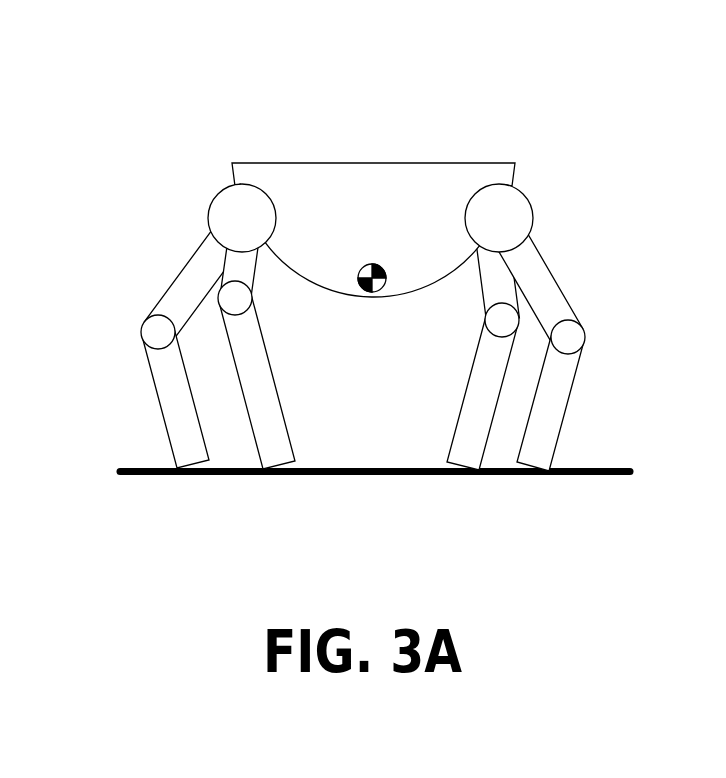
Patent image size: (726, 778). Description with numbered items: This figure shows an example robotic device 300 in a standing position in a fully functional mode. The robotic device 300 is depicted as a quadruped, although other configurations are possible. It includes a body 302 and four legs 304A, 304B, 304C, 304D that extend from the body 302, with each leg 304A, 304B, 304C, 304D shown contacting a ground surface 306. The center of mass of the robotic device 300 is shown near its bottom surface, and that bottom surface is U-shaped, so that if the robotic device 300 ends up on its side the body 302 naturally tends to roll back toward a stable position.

The robotic device 300 is at (512, 92).
The body 302 is at (333, 162).
The leg 304A is at (178, 273).
The leg 304B is at (267, 372).
The leg 304C is at (457, 423).
The leg 304D is at (553, 278).
The ground surface 306 is at (597, 470).